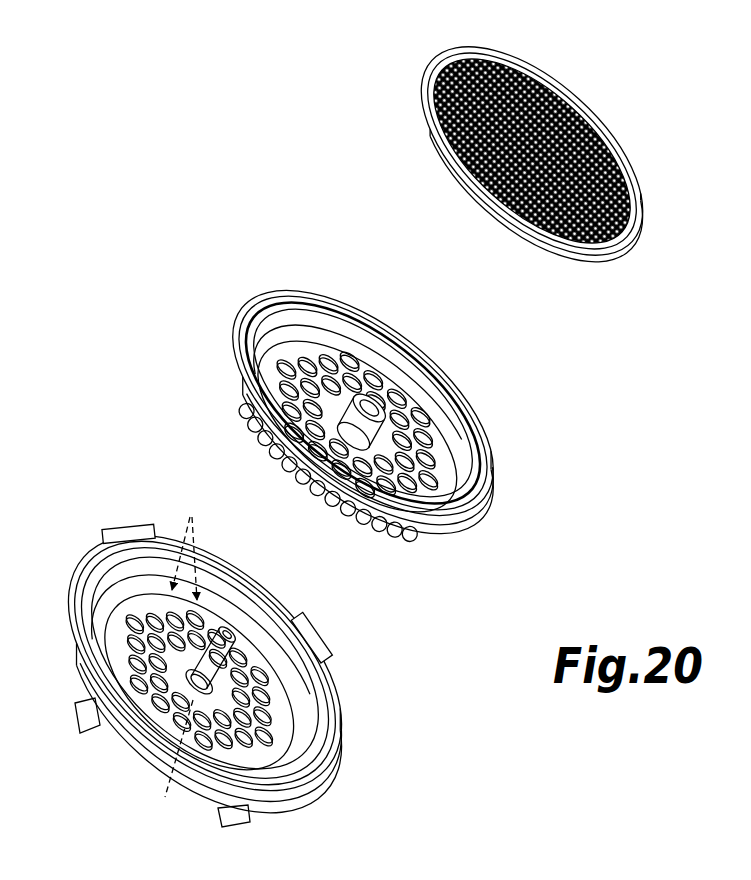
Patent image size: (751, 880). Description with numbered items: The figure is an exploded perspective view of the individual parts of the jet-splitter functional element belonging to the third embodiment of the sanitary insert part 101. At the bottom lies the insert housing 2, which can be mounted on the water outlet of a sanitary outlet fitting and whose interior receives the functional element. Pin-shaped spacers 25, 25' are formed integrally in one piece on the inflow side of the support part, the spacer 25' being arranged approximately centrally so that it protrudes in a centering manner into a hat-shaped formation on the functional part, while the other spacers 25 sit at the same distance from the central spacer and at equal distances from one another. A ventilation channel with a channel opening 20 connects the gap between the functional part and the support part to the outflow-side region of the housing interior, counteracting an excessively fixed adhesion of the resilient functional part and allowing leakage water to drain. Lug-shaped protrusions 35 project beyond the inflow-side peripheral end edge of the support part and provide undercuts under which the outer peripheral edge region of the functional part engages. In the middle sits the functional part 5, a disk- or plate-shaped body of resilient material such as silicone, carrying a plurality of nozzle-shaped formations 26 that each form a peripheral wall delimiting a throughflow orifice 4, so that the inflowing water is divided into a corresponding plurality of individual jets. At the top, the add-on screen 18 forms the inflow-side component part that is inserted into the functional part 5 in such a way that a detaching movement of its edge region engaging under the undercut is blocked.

The sanitary insert part 101 is at (194, 228).
The add-on screen 18 is at (607, 121).
The functional part 5 is at (474, 402).
The throughflow orifice 4 is at (414, 341).
The formation 26 is at (405, 385).
The insert housing 2 is at (334, 717).
The lug-shaped protrusions 35 is at (128, 536).
The spacer 25 is at (182, 535).
The central spacer 25' is at (240, 627).
The channel opening 20 is at (158, 774).